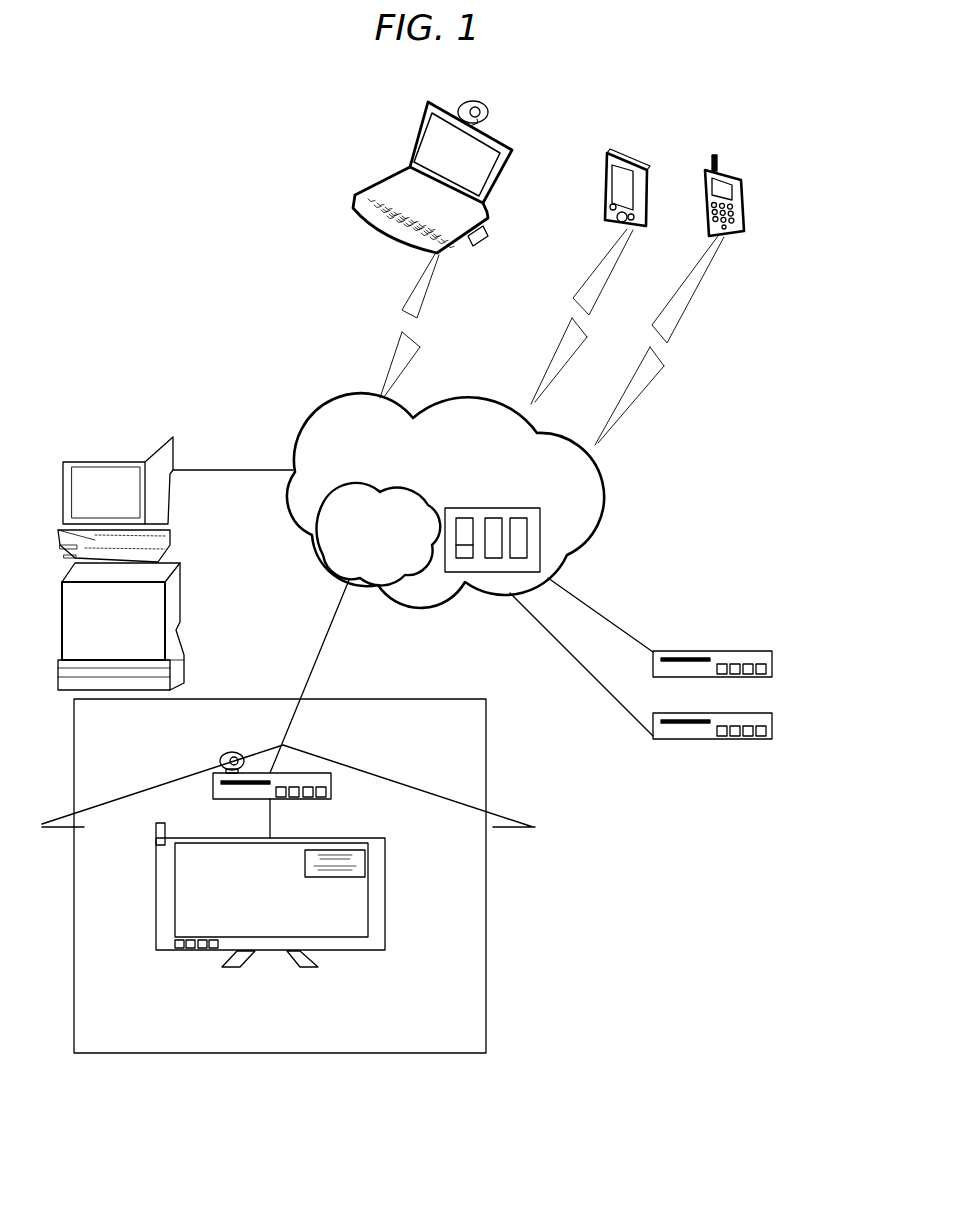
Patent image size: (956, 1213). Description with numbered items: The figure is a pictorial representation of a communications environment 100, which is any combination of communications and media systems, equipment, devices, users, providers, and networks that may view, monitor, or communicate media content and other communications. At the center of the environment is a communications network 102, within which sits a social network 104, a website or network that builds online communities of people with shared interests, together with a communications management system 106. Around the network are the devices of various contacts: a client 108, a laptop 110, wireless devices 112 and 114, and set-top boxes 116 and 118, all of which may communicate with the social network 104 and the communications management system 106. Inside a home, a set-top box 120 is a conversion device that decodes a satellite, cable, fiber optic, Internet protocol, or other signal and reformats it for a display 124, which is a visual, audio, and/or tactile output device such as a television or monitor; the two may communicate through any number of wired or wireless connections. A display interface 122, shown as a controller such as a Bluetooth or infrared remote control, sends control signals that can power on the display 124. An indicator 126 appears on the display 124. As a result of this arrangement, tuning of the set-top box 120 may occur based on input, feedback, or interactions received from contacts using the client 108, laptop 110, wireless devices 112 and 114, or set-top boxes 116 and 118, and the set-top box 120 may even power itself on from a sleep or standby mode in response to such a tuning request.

The communications environment 100 is at (162, 206).
The communications network 102 is at (462, 488).
The social network 104 is at (359, 566).
The communications management system 106 is at (503, 545).
The client 108 is at (87, 504).
The laptop 110 is at (435, 170).
The wireless device 112 is at (632, 186).
The wireless device 114 is at (743, 188).
The set-top box 116 is at (765, 666).
The set-top box 118 is at (767, 727).
The set-top box 120 is at (331, 786).
The display interface 122 is at (220, 762).
The display 124 is at (332, 900).
The indicator 126 is at (366, 851).